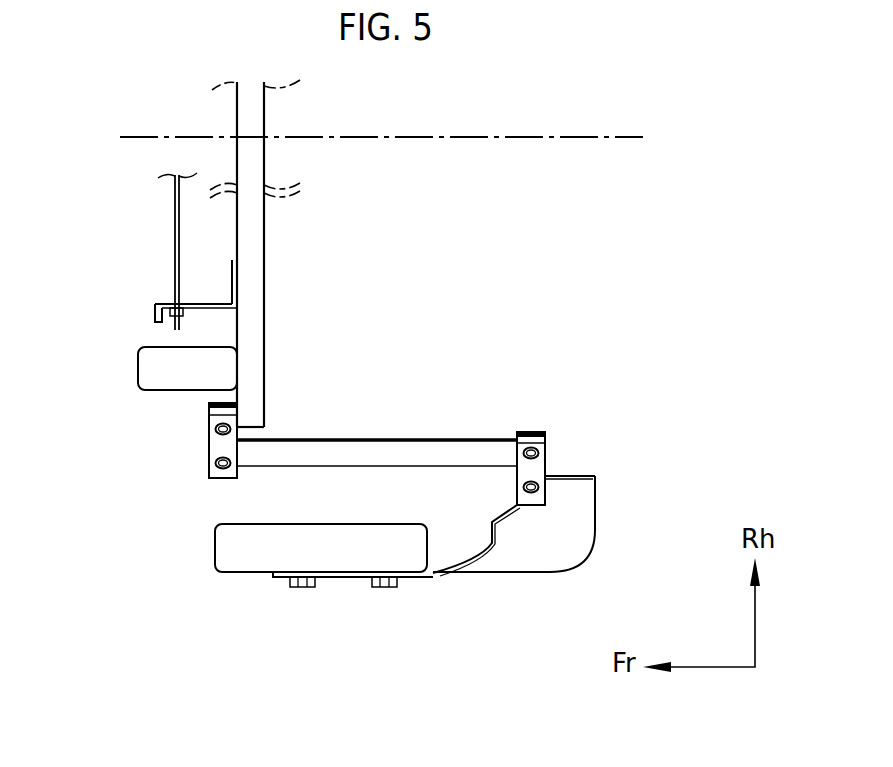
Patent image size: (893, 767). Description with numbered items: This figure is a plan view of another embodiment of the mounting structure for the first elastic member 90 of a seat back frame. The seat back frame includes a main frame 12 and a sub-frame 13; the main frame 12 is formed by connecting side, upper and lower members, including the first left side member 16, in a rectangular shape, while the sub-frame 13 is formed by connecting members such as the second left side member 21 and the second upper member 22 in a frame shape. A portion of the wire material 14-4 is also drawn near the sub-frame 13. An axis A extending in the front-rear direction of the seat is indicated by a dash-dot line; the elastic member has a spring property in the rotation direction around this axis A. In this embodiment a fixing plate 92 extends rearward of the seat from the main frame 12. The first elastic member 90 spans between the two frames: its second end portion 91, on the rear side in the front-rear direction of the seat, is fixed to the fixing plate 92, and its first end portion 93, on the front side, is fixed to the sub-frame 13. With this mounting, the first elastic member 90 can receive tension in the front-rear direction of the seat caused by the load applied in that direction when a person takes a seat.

The main frame 12 is at (250, 573).
The sub-frame 13 is at (281, 253).
The rod 14-4 is at (175, 240).
The first left side member 16 is at (222, 548).
The second left side member 21 is at (153, 366).
The second upper member 22 is at (253, 243).
The first elastic member 90 is at (400, 443).
The second end portion 91 is at (533, 470).
The fixing plate 92 is at (533, 545).
The first end portion 93 is at (210, 443).
The axis A is at (510, 138).